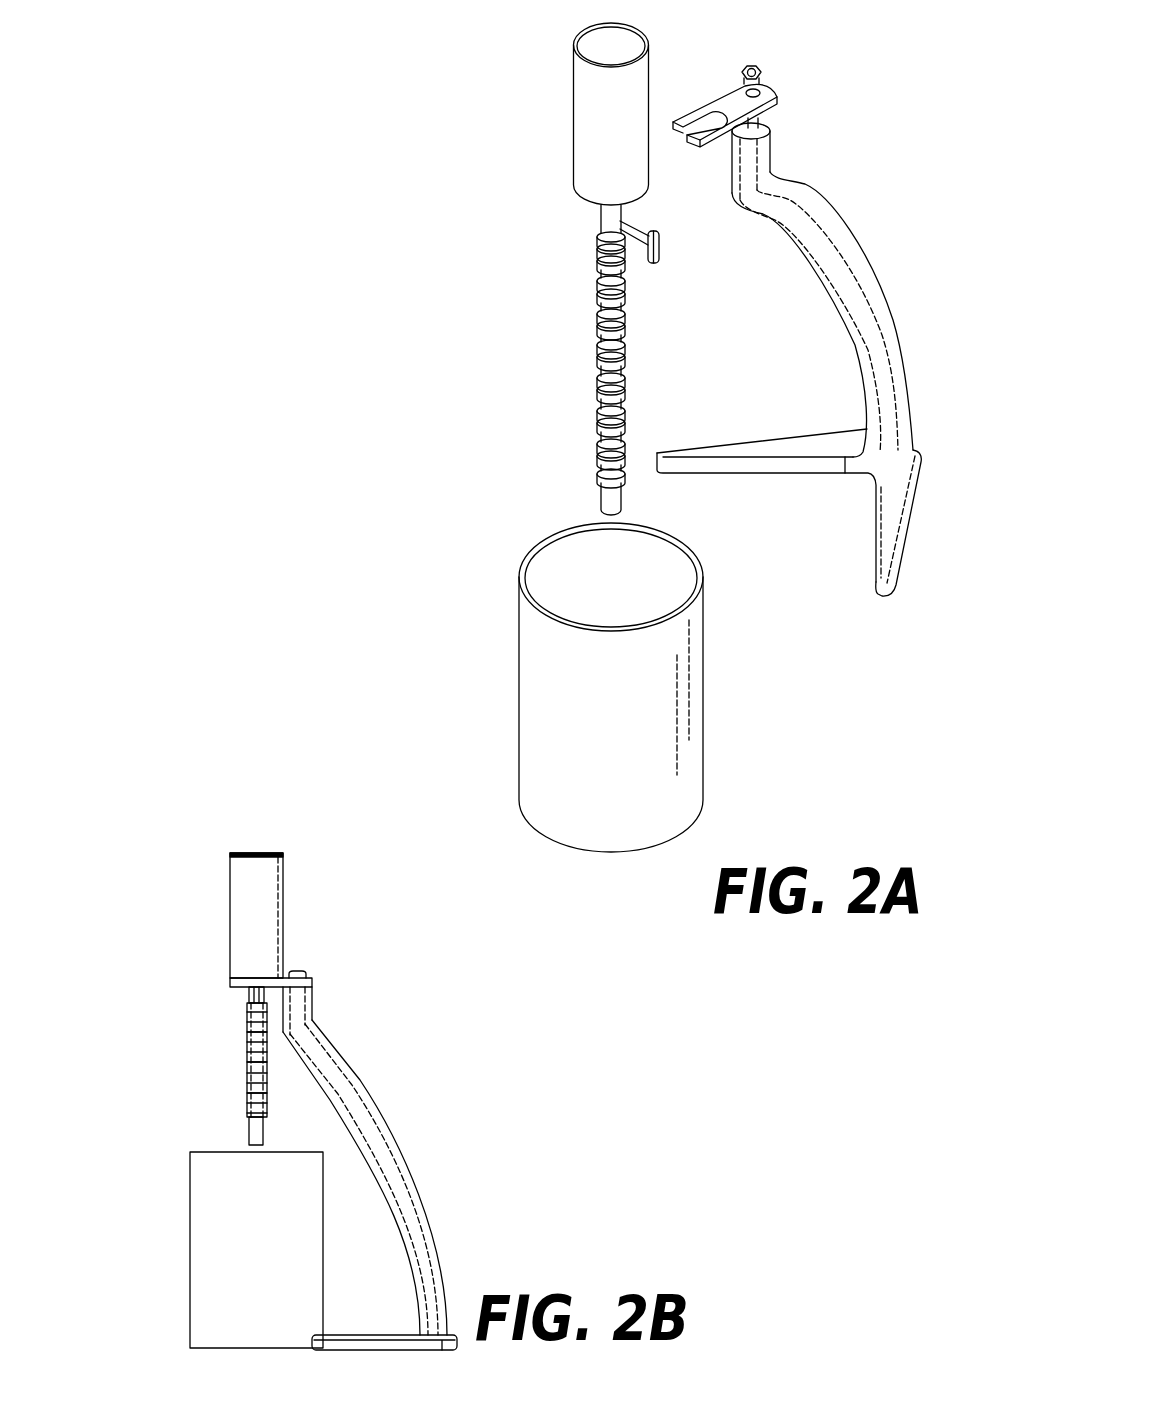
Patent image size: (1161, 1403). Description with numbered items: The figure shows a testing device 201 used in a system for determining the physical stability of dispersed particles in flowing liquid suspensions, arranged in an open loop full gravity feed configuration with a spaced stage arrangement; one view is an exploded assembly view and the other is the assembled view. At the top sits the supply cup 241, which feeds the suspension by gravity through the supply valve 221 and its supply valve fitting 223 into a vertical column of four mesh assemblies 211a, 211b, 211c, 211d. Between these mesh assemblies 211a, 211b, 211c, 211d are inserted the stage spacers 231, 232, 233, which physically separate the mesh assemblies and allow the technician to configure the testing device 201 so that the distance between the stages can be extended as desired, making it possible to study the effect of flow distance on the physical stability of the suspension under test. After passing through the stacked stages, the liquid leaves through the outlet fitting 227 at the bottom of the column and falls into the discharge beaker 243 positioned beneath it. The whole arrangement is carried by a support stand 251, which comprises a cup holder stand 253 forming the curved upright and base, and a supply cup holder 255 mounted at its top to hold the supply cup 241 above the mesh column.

In FIG. 2A, the testing device 201 is at (919, 19).
In FIG. 2B, the testing device 201 is at (446, 923).
In FIG. 2A, the supply cup 241 is at (531, 112).
In FIG. 2B, the supply cup 241 is at (219, 915).
In FIG. 2A, the supply valve 221 is at (517, 150).
In FIG. 2A, the supply valve fitting 223 is at (536, 190).
In FIG. 2B, the supply valve fitting 223 is at (207, 979).
In FIG. 2A, the mesh assembly 211a is at (516, 220).
In FIG. 2B, the mesh assembly 211a is at (163, 1006).
In FIG. 2A, the mesh assembly 211b is at (514, 312).
In FIG. 2B, the mesh assembly 211b is at (164, 1038).
In FIG. 2A, the mesh assembly 211c is at (514, 407).
In FIG. 2B, the mesh assembly 211c is at (163, 1081).
In FIG. 2A, the mesh assembly 211d is at (515, 482).
In FIG. 2B, the mesh assembly 211d is at (163, 1071).
In FIG. 2A, the stage spacer 231 is at (519, 264).
In FIG. 2A, the stage spacer 232 is at (519, 367).
In FIG. 2A, the stage spacer 233 is at (520, 445).
In FIG. 2A, the outlet fitting 227 is at (517, 526).
In FIG. 2B, the outlet fitting 227 is at (194, 1140).
In FIG. 2A, the discharge beaker 243 is at (669, 687).
In FIG. 2B, the discharge beaker 243 is at (207, 1250).
In FIG. 2A, the support stand 251 is at (809, 357).
In FIG. 2B, the support stand 251 is at (357, 1160).
In FIG. 2A, the cup holder stand 253 is at (847, 314).
In FIG. 2A, the supply cup holder 255 is at (809, 97).